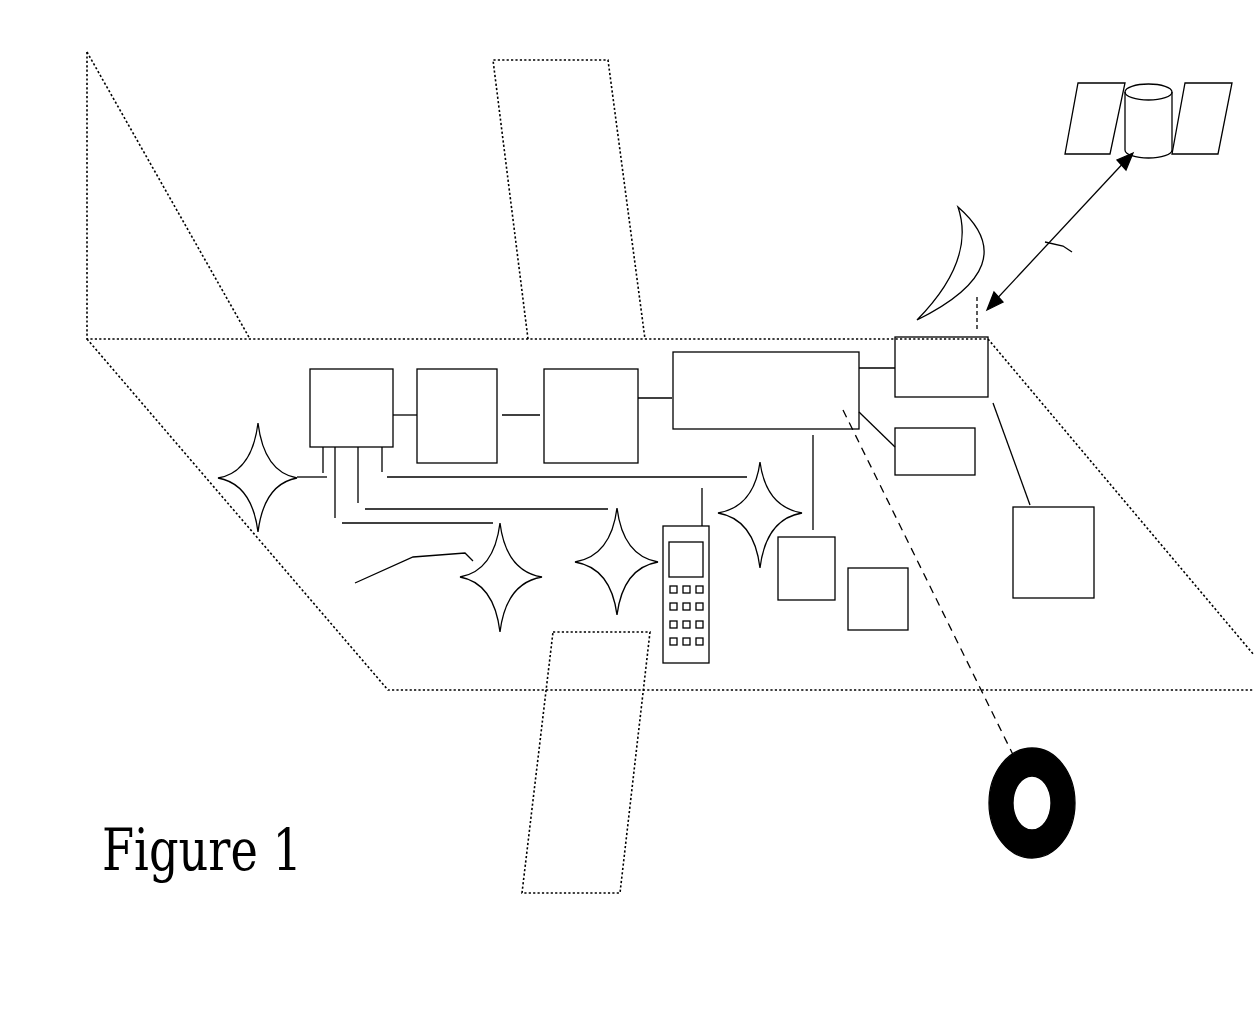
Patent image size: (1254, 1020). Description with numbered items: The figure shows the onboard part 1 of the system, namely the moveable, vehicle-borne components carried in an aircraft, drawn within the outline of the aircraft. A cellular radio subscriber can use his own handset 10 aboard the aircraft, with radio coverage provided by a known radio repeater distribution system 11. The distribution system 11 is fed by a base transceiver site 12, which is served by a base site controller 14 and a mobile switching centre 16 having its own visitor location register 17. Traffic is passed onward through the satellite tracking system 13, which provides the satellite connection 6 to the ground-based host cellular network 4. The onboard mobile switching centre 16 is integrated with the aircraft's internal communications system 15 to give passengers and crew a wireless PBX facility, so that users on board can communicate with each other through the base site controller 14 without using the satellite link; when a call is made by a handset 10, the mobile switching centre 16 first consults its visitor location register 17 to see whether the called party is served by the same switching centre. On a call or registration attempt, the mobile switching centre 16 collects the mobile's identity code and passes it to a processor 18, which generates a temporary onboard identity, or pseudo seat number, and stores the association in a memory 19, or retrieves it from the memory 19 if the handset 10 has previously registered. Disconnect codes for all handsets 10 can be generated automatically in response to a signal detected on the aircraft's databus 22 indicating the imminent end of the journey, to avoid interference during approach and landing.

The onboard part 1 is at (78, 684).
The host cellular network 4 is at (558, 199).
The satellite connection 6 is at (1113, 72).
The handset 10 is at (709, 600).
The radio repeater distribution system 11 is at (277, 513).
The base transceiver site 12 is at (453, 369).
The satellite tracking system 13 is at (913, 313).
The base site controller 14 is at (582, 369).
The aircraft's internal communications system 15 is at (1094, 530).
The mobile switching centre 16 is at (742, 350).
The visitor location register 17 is at (953, 477).
The processor 18 is at (795, 599).
The memory 19 is at (895, 622).
The aircraft's databus 22 is at (943, 613).